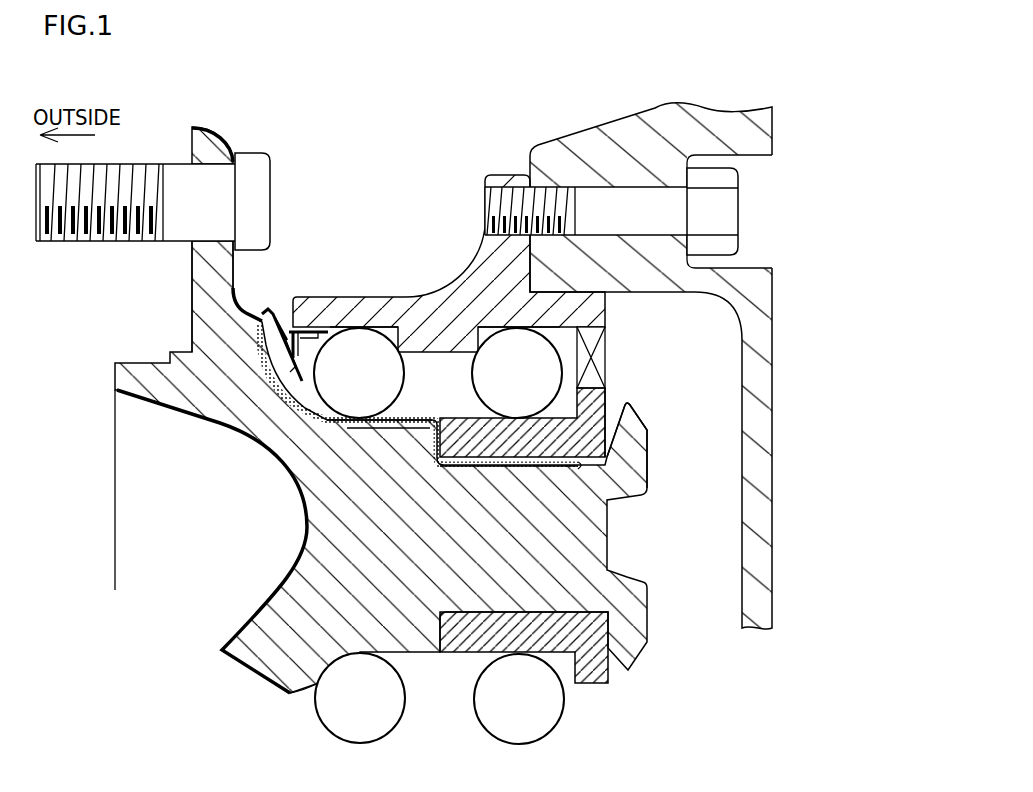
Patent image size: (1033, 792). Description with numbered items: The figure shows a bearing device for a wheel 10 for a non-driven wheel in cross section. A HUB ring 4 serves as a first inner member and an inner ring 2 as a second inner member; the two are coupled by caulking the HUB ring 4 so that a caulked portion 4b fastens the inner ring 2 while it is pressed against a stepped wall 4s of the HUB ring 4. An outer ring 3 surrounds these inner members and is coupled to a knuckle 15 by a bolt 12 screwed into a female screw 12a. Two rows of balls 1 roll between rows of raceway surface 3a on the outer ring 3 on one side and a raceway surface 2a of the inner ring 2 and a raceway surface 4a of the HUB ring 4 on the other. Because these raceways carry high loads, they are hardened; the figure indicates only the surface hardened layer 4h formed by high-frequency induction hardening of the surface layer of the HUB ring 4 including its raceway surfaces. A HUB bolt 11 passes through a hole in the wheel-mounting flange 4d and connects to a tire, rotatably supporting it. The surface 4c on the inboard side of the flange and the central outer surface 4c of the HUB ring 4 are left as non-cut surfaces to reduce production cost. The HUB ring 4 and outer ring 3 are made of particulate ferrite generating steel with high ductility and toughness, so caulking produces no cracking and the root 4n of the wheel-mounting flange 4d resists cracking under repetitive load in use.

The bearing device for a wheel 10 is at (434, 61).
The HUB bolt 11 is at (138, 178).
The HUB ring 4 is at (377, 515).
The raceway surface of HUB ring 4a is at (330, 340).
The caulked portion 4b is at (627, 435).
The non-cut surface 4c is at (225, 128).
The wheel-mounting flange 4d is at (202, 138).
The surface hardened layer 4h is at (257, 347).
The root of the wheel-mounting flange 4n is at (210, 305).
The stepped wall 4s is at (457, 416).
The outer ring 3 is at (414, 325).
The raceway surface of outer ring 3a is at (374, 338).
The balls 1 is at (382, 355).
The inner ring 2 is at (578, 410).
The raceway surface of inner ring 2a is at (604, 450).
The bolt 12 is at (652, 182).
The female screw 12a is at (509, 192).
The knuckle 15 is at (745, 132).